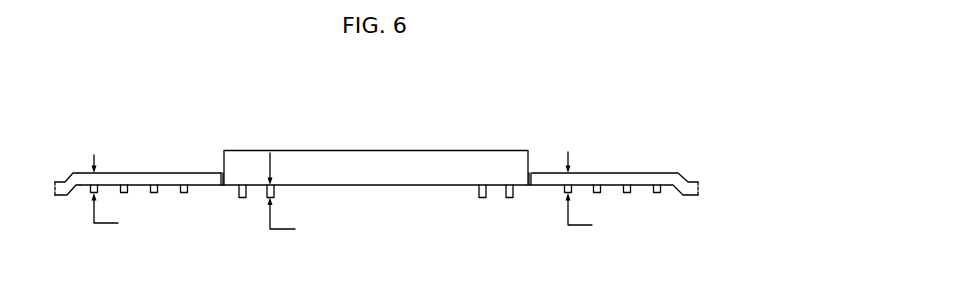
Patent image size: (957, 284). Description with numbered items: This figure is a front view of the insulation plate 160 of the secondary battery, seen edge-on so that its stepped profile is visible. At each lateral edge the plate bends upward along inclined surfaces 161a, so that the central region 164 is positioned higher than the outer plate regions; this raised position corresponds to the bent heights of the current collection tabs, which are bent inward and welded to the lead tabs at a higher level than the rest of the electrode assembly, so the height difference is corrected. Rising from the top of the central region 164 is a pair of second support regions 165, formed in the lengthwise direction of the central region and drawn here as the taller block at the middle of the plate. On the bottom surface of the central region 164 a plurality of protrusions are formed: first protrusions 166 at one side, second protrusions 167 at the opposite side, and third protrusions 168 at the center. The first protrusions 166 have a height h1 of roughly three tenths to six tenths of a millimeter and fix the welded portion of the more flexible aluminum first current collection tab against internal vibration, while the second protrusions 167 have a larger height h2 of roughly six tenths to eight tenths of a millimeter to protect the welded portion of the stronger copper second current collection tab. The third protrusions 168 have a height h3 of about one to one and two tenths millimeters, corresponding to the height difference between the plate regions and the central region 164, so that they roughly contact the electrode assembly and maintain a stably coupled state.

The insulation plate 160 is at (380, 160).
The inclined surfaces 161a is at (66, 181).
The central region 164 is at (155, 178).
The second support regions 165 is at (373, 155).
The first protrusions 166 is at (152, 193).
The second protrusions 167 is at (627, 193).
The third protrusions 168 is at (241, 198).
The height of first protrusions h1 is at (105, 190).
The height of second protrusions h2 is at (579, 190).
The height of third protrusions h3 is at (282, 192).